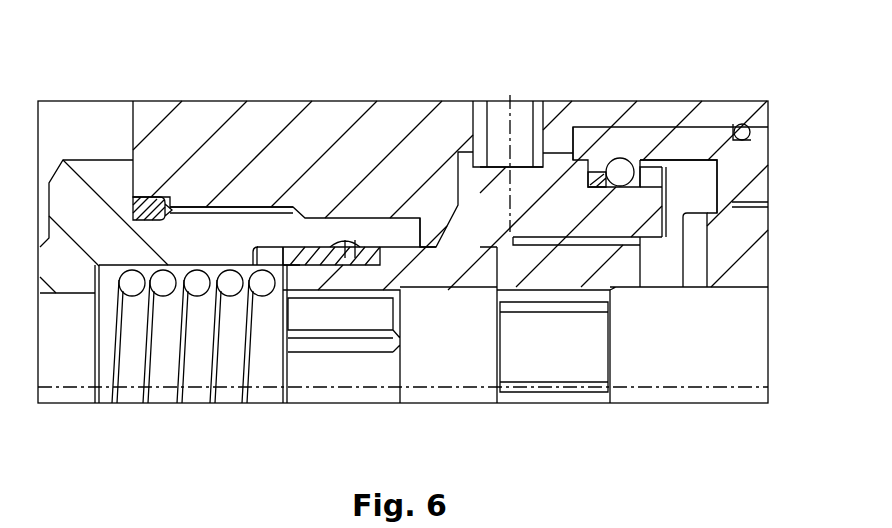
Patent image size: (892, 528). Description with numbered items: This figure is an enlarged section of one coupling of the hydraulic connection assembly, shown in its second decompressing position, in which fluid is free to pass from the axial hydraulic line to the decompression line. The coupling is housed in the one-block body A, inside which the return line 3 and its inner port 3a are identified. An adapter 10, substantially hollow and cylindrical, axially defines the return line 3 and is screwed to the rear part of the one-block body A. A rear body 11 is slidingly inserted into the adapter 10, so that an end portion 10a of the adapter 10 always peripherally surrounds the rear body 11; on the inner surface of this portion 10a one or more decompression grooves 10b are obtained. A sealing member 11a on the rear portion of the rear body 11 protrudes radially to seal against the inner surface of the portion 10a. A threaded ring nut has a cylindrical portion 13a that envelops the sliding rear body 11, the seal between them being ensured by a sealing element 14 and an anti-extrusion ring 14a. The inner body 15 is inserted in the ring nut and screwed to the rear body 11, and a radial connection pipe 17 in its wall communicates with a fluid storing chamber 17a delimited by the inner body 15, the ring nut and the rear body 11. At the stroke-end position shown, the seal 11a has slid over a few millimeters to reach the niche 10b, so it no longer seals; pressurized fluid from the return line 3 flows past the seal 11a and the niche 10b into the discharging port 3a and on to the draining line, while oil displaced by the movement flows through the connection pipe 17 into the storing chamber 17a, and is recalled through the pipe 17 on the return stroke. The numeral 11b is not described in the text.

The return line 3 is at (58, 339).
The inner port 3a is at (522, 110).
The adapter 10 is at (107, 172).
The end portion of the adapter 10a is at (400, 228).
The decompression grooves 10b is at (333, 247).
The rear body 11 is at (553, 187).
The sealing member 11a is at (373, 247).
The valve body portion 11b is at (303, 265).
The cylindrical portion of the ring nut 13a is at (663, 145).
The sealing element 14 is at (618, 158).
The anti-extrusion ring 14a is at (595, 183).
The inner body 15 is at (747, 273).
The connection pipe 17 is at (692, 247).
The fluid storing chamber 17a is at (697, 175).
The one-block body A is at (218, 110).